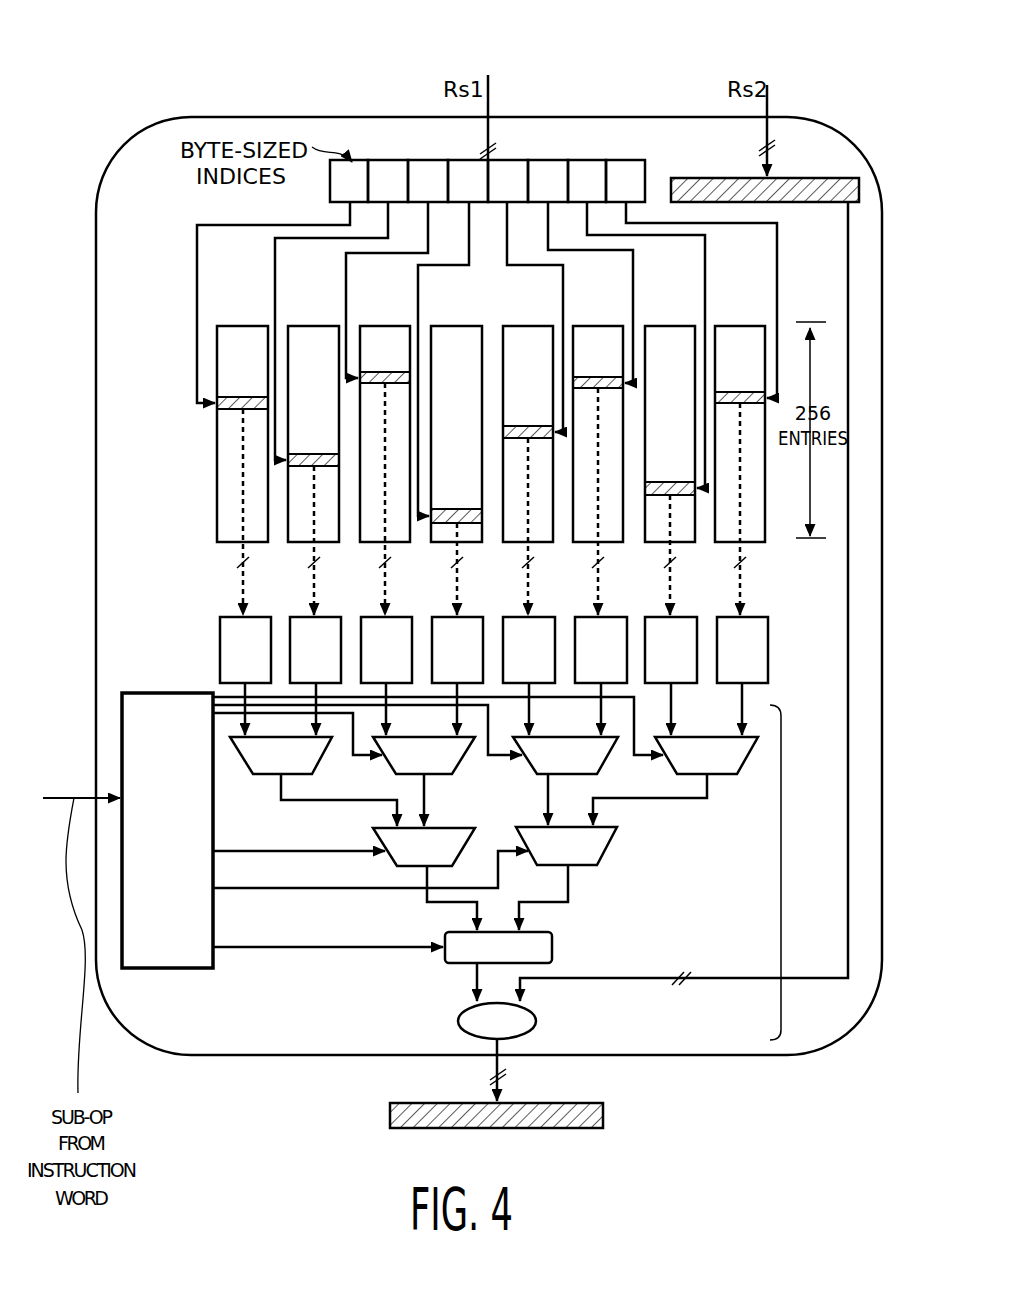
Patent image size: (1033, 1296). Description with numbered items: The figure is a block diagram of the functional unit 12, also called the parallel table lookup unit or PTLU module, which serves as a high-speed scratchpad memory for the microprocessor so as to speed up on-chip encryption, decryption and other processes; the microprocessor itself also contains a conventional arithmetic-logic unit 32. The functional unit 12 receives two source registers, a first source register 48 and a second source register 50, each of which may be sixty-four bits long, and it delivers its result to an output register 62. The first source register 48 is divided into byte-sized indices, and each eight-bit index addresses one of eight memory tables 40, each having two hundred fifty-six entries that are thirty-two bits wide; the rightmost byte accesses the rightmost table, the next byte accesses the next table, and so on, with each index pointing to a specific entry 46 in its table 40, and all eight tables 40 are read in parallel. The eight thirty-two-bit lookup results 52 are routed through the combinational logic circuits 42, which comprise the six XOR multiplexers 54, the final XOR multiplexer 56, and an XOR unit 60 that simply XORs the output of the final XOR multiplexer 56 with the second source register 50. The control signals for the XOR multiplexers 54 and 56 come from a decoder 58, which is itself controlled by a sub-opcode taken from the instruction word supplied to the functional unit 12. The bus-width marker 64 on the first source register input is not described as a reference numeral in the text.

The functional unit 12 is at (808, 80).
The arithmetic-logic unit 32 is at (512, 558).
The memory tables 40 is at (240, 326).
The combinational logic circuits 42 is at (783, 876).
The entry 46 is at (226, 404).
The first source register Rs1 48 is at (585, 160).
The second source register Rs2 50 is at (808, 204).
The lookup results 52 is at (368, 617).
The XOR multiplexers 54 is at (262, 776).
The XOR multiplexer 56 is at (552, 949).
The decoder 58 is at (196, 968).
The XOR unit 60 is at (537, 1022).
The output register Rd 62 is at (603, 1116).
The bus width indicator 64 is at (507, 118).